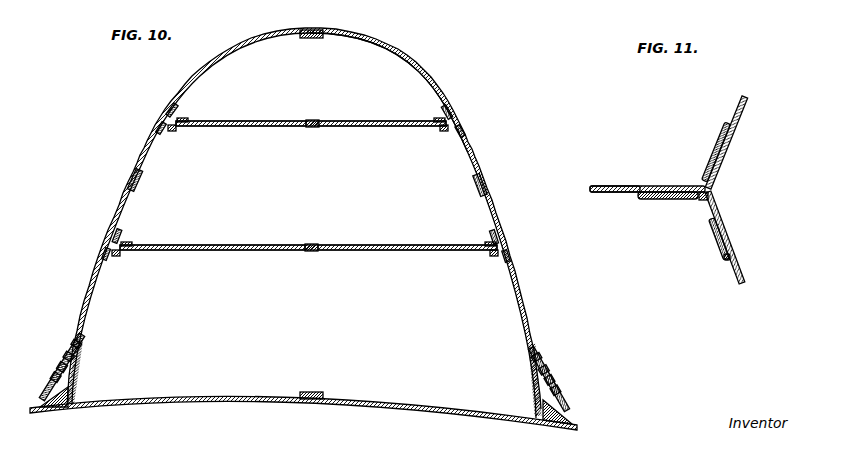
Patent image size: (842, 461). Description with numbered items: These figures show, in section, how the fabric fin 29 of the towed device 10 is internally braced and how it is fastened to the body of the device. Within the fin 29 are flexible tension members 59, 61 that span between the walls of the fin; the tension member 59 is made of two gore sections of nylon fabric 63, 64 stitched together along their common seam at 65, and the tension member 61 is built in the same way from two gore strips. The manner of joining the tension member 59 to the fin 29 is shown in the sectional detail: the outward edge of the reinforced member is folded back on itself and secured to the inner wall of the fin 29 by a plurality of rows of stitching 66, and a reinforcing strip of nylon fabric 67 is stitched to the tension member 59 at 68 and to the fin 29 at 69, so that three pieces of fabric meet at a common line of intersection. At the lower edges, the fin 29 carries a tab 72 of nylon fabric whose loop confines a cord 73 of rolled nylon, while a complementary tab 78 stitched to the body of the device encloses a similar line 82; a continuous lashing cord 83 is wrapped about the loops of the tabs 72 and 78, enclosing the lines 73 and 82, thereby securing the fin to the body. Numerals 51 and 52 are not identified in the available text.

In FIG. 10, the device 10 is at (108, 410).
In FIG. 10, the fin 29 is at (435, 87).
In FIG. 11, the fin 29 is at (749, 103).
In FIG. 10, the channel section of arch 51 is at (238, 47).
In FIG. 11, the channel section of arch 51 is at (746, 263).
In FIG. 10, the splice plate 52 is at (311, 30).
In FIG. 10, the tension member 59 is at (250, 120).
In FIG. 11, the tension member 59 is at (623, 185).
In FIG. 10, the tension member 61 is at (219, 244).
In FIG. 10, the gore section 63 is at (237, 127).
In FIG. 10, the gore section 64 is at (380, 127).
In FIG. 11, the gore section 64 is at (597, 194).
In FIG. 10, the stitching 65 is at (312, 120).
In FIG. 10, the rows of stitching 66 is at (171, 110).
In FIG. 11, the rows of stitching 66 is at (725, 162).
In FIG. 10, the reinforcing strip 67 is at (172, 130).
In FIG. 11, the reinforcing strip 67 is at (703, 202).
In FIG. 10, the stitching 68 is at (186, 119).
In FIG. 11, the stitching 68 is at (668, 200).
In FIG. 10, the stitching 69 is at (160, 127).
In FIG. 11, the stitching 69 is at (724, 244).
In FIG. 10, the tab 72 is at (68, 346).
In FIG. 10, the cord 73 is at (63, 358).
In FIG. 10, the complementary tab 78 is at (60, 409).
In FIG. 10, the line 82 is at (54, 385).
In FIG. 10, the cord 83 is at (58, 368).